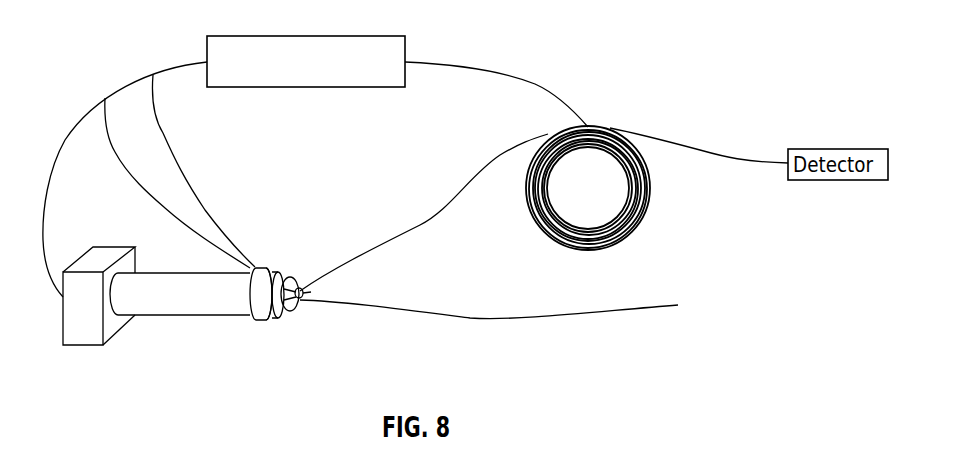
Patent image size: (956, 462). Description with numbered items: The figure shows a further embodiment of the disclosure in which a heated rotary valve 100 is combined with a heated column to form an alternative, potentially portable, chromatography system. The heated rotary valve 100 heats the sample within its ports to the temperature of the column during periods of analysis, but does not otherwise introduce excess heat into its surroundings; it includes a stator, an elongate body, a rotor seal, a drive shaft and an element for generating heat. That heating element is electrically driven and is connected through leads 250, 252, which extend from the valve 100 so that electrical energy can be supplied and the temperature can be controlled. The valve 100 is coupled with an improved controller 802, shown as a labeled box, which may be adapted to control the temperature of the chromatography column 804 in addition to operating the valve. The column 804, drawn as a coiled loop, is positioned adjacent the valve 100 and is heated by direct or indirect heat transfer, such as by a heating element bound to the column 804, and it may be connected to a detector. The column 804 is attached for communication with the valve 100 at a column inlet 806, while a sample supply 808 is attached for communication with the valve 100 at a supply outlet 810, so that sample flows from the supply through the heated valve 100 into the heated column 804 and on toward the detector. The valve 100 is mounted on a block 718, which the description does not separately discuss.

The controller 802 is at (342, 36).
The chromatography column 804 is at (652, 185).
The column inlet 806 is at (330, 262).
The sample supply 808 is at (665, 306).
The supply outlet 810 is at (318, 297).
The heated rotary valve 100 is at (272, 322).
The housing block 718 is at (103, 255).
The lead 250 is at (180, 143).
The lead 252 is at (107, 140).